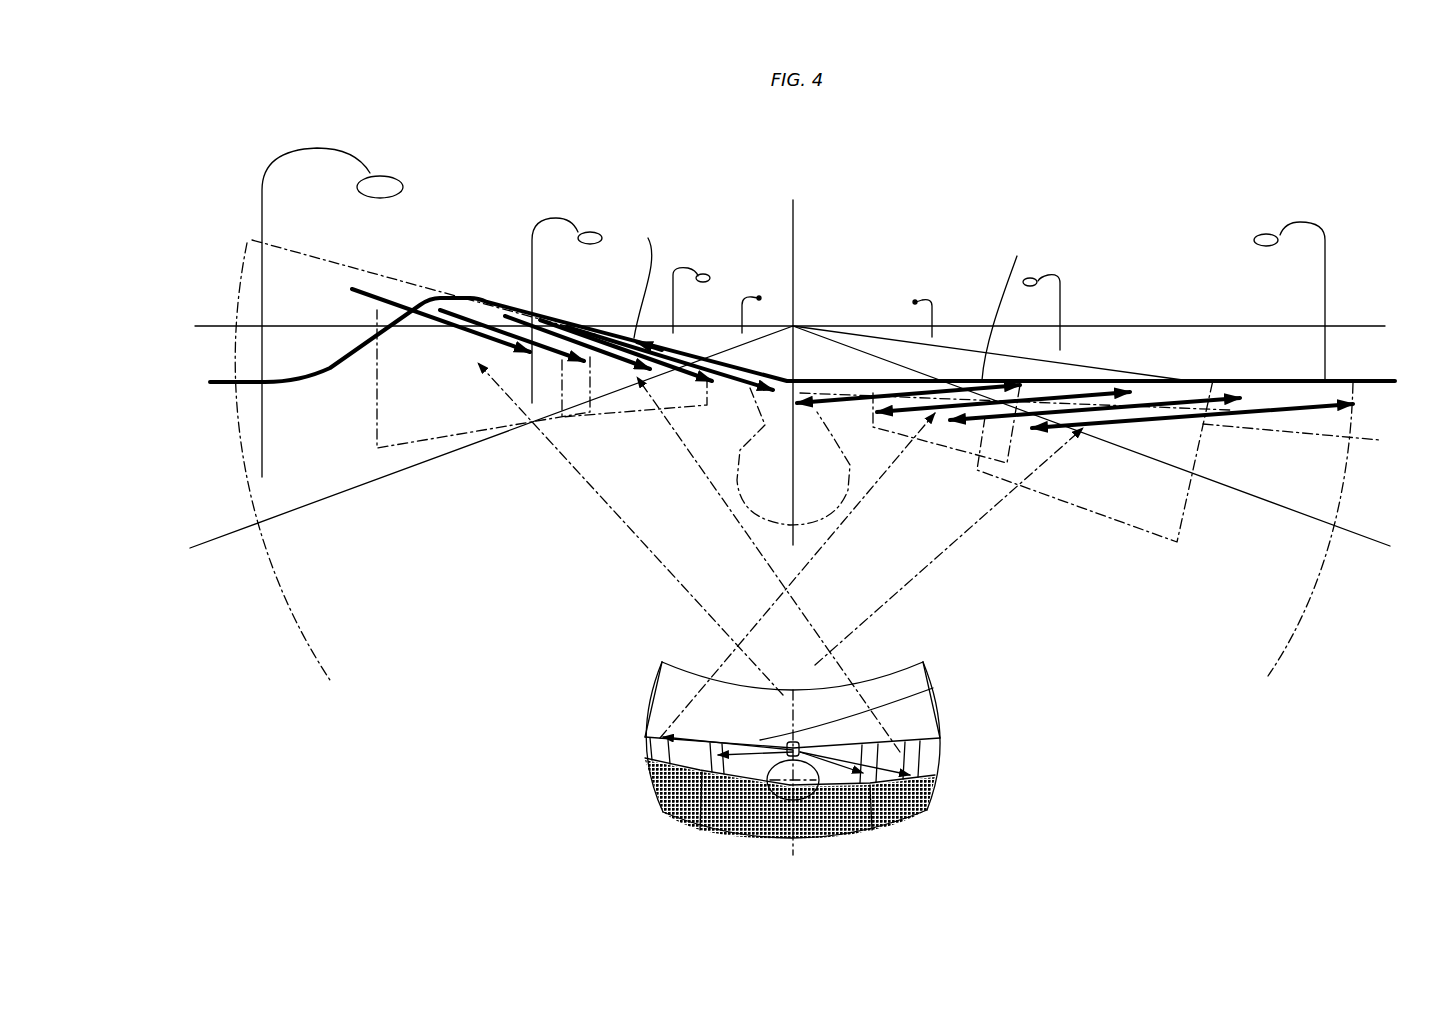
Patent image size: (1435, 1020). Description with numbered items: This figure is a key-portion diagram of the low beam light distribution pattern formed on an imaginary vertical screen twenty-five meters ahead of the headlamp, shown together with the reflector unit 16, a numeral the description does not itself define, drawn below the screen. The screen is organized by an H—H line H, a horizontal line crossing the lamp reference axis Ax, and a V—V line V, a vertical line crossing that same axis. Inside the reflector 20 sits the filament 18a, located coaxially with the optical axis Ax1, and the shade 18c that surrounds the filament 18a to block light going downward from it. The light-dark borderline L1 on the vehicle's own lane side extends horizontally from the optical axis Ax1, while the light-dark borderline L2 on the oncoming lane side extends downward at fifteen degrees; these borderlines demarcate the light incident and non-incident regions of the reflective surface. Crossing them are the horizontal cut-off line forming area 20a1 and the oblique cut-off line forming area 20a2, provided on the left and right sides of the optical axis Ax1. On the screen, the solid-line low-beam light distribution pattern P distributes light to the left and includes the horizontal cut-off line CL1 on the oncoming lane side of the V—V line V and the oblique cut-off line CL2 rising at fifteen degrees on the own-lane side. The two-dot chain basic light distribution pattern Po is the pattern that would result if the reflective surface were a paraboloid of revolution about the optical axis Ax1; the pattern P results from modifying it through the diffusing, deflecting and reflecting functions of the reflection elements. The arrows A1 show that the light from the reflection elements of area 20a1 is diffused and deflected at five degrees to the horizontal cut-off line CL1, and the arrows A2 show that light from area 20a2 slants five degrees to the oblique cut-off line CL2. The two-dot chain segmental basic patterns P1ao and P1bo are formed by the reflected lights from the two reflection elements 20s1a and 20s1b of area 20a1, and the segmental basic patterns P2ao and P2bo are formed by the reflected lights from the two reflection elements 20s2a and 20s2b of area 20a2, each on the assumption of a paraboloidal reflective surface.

The H—H line H is at (791, 326).
The V—V line V is at (793, 375).
The low-beam light distribution pattern P is at (1082, 362).
The arrows A2 is at (550, 337).
The arrows A1 is at (1103, 387).
The oblique cut-off line CL2 is at (645, 276).
The horizontal cut-off line CL1 is at (1008, 306).
The basic light distribution pattern Po is at (343, 255).
The segmental basic light distribution pattern P2bo is at (420, 463).
The segmental basic light distribution pattern P2ao is at (608, 474).
The segmental basic light distribution pattern P1ao is at (926, 448).
The segmental basic light distribution pattern P1bo is at (1090, 515).
The light emitted by lamp unit 16 is at (912, 633).
The reflector 20 is at (782, 757).
The lamp reference axis Ax is at (729, 790).
The optical axis Ax1 is at (727, 830).
The filament 18a is at (845, 712).
The shade 18c is at (787, 746).
The light-dark borderline L1 is at (645, 735).
The light-dark borderline L2 is at (940, 770).
The horizontal cut-off line forming area 20a1 is at (686, 727).
The oblique cut-off line forming area 20a2 is at (909, 739).
The reflection element 20s1a is at (657, 793).
The reflection element 20s1b is at (693, 820).
The reflection element 20s2a is at (923, 810).
The reflection element 20s2b is at (873, 822).